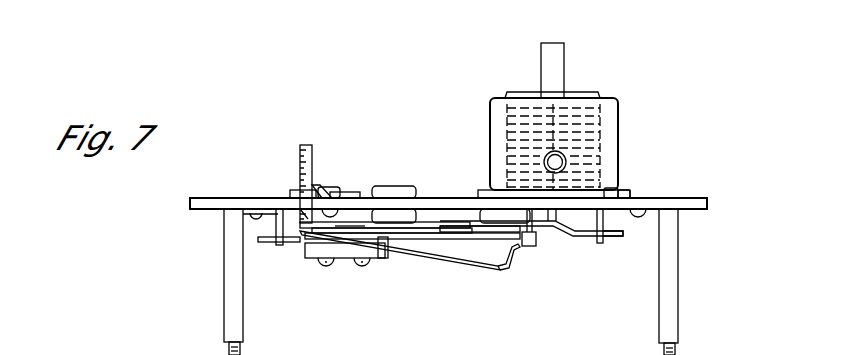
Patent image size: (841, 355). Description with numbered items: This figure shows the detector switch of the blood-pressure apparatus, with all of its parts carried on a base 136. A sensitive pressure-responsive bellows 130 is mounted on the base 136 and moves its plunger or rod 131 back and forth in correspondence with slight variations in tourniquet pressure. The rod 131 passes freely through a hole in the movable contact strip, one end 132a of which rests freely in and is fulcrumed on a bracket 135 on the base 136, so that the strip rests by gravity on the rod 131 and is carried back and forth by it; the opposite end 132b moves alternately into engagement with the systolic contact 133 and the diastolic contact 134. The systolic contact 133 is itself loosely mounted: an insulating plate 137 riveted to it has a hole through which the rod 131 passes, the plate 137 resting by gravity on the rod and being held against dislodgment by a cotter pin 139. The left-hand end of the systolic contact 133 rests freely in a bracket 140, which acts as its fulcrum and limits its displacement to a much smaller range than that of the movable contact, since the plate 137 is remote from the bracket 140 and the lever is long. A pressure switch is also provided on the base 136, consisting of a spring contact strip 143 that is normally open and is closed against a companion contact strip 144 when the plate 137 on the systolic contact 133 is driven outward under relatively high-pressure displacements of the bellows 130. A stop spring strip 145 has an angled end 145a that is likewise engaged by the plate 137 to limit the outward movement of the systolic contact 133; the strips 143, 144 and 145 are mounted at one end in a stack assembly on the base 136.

The bellows 130 is at (618, 150).
The rod 131 is at (537, 250).
The end of movable contact 132a is at (606, 242).
The opposite end of contact 132b is at (300, 228).
The systolic contact 133 is at (304, 258).
The diastolic contact 134 is at (318, 217).
The bracket 135 is at (600, 246).
The base 136 is at (688, 197).
The insulating plate 137 is at (495, 236).
The cotter pin 139 is at (562, 240).
The bracket 140 is at (276, 244).
The spring contact strip 143 is at (452, 268).
The companion contact strip 144 is at (422, 238).
The stop spring strip 145 is at (458, 270).
The angled end 145a is at (516, 268).